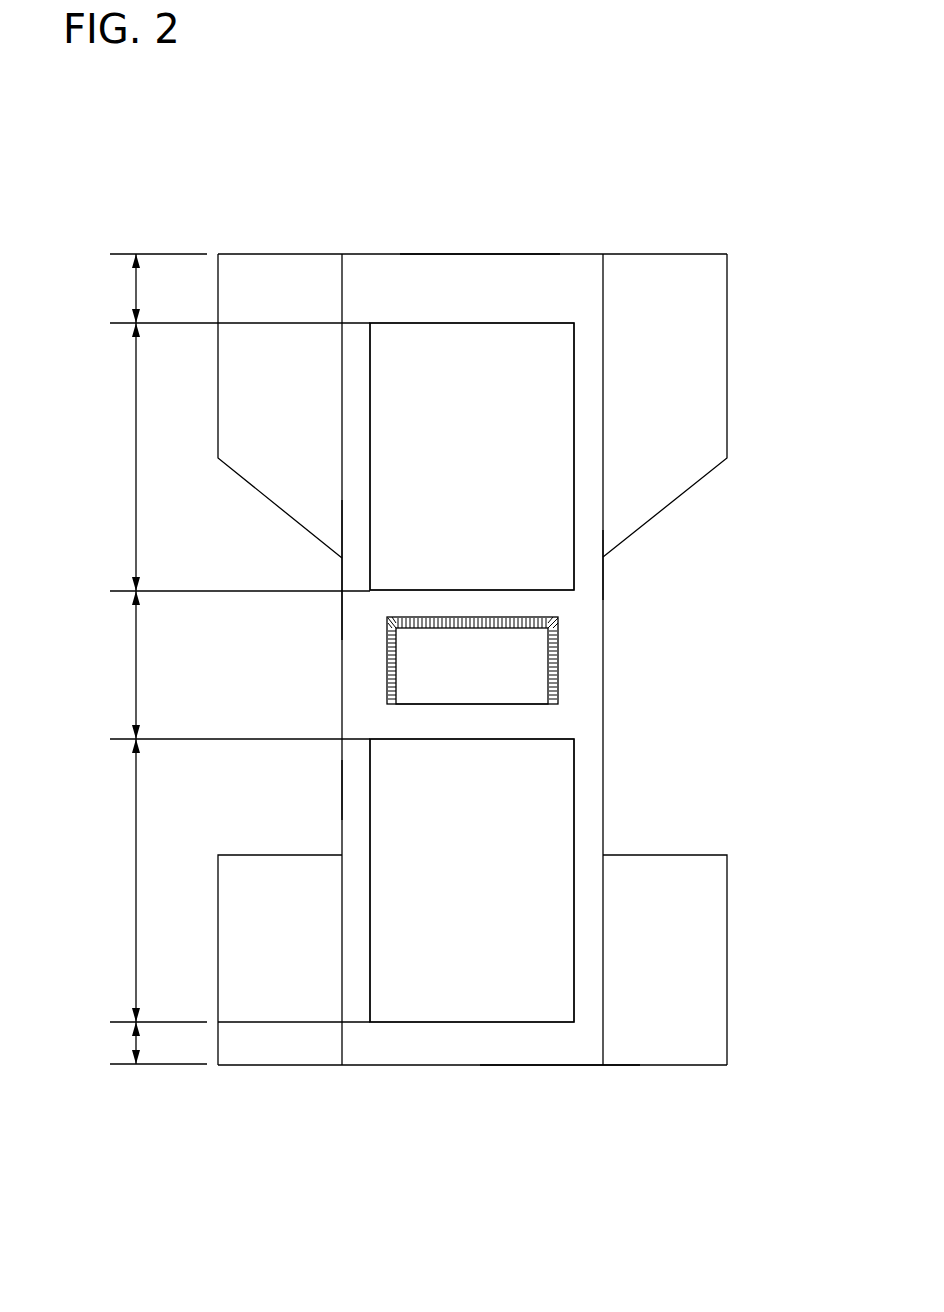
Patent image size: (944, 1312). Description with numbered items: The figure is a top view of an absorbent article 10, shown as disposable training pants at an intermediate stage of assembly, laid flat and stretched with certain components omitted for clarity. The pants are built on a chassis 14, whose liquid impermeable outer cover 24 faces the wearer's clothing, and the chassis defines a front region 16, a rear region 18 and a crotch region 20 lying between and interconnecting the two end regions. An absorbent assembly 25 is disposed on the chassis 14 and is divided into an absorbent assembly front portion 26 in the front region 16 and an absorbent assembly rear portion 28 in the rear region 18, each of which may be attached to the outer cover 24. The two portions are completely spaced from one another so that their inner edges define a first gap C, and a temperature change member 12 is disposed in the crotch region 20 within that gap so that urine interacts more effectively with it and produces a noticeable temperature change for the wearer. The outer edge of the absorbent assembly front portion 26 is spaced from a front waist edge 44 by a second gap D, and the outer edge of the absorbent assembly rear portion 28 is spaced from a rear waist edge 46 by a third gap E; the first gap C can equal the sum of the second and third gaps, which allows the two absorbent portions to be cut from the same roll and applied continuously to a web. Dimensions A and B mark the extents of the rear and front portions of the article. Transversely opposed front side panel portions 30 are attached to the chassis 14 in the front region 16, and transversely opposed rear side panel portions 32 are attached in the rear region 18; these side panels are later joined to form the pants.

The absorbent article 10 is at (735, 608).
The temperature change member 12 is at (390, 657).
The chassis 14 is at (338, 568).
The front region 16 is at (585, 923).
The rear region 18 is at (362, 441).
The crotch region 20 is at (560, 673).
The outer cover 24 is at (355, 790).
The absorbent assembly 25 is at (512, 340).
The absorbent assembly front portion 26 is at (432, 1008).
The absorbent assembly rear portion 28 is at (556, 558).
The front side panel portions 30 is at (242, 947).
The rear side panel portions 32 is at (245, 371).
The front waist edge 44 is at (560, 1065).
The rear waist edge 46 is at (474, 254).
The front panel length dimension A is at (136, 468).
The back panel length dimension B is at (136, 871).
The first gap C is at (136, 664).
The second gap D is at (136, 1043).
The third gap E is at (136, 288).